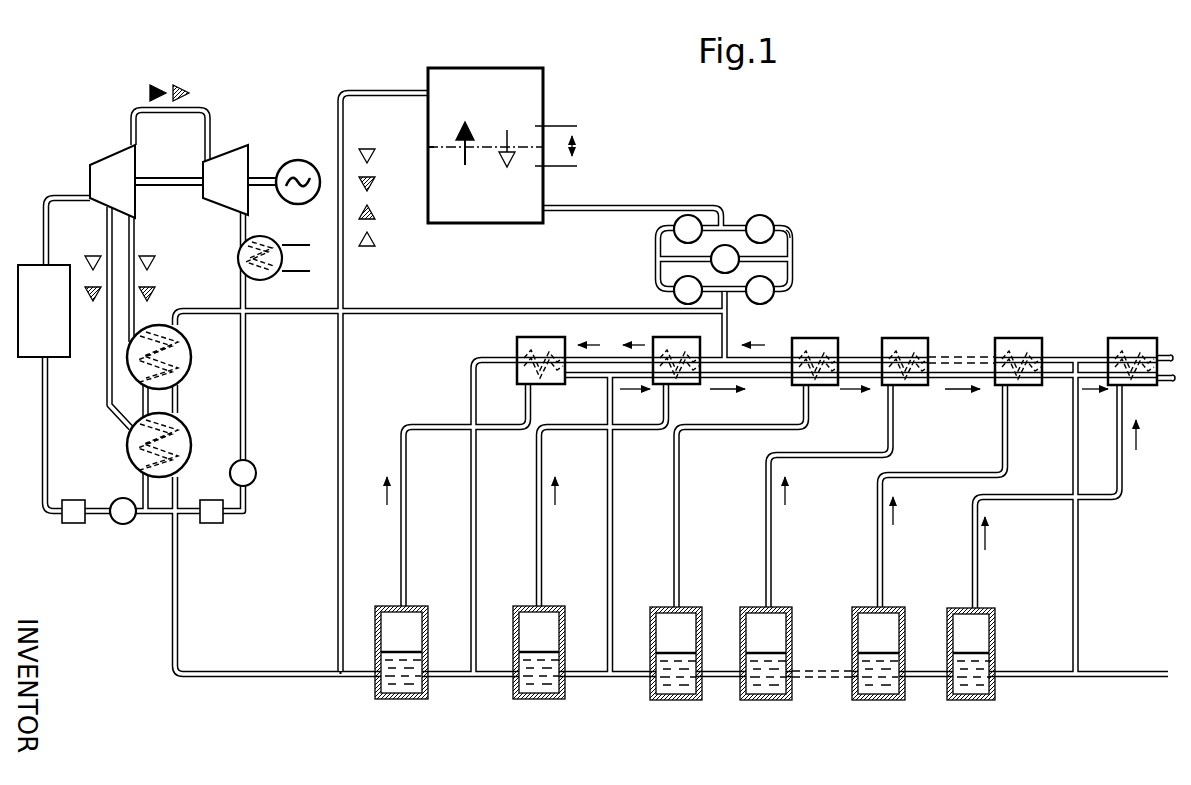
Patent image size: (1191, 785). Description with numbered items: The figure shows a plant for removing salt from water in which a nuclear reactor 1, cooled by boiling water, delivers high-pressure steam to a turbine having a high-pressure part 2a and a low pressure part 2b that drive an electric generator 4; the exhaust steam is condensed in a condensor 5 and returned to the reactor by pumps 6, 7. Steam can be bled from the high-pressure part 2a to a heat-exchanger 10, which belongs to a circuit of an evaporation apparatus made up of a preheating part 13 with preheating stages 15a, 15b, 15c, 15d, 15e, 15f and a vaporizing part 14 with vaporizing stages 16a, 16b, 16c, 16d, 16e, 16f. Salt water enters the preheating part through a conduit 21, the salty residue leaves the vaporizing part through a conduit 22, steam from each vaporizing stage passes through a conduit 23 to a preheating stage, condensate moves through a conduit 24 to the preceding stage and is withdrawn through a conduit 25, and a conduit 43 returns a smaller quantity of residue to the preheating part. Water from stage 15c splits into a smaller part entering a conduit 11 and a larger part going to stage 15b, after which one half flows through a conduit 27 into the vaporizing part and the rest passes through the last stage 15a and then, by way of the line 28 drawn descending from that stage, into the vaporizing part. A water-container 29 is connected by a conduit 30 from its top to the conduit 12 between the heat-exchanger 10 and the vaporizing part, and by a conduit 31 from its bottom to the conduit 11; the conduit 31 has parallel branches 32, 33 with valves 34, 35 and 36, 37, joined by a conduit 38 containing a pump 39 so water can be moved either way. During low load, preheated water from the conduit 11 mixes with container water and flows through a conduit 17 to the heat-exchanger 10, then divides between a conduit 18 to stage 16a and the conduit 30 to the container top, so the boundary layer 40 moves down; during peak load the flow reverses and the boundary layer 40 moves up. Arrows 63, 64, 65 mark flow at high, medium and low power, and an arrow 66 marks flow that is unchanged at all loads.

The nuclear reactor 1 is at (44, 311).
The high-pressure part 2a is at (108, 160).
The low pressure part 2b is at (232, 152).
The electric generator 4 is at (301, 161).
The condensor 5 is at (267, 245).
The pump 6 is at (225, 460).
The pump 7 is at (135, 490).
The heat-exchanger 10 is at (190, 368).
The conduit 11 is at (728, 330).
The conduit 12 is at (247, 678).
The preheating part 13 is at (1038, 316).
The vaporizing part 14 is at (854, 714).
The preheating stage 15a is at (532, 350).
The preheating stage 15b is at (664, 350).
The preheating stage 15c is at (802, 350).
The preheating stage 15d is at (890, 350).
The preheating stage 15e is at (1018, 350).
The preheating stage 15f is at (1130, 350).
The vaporizing stage 16a is at (414, 690).
The vaporizing stage 16b is at (552, 690).
The vaporizing stage 16c is at (689, 690).
The vaporizing stage 16d is at (779, 690).
The vaporizing stage 16e is at (892, 690).
The vaporizing stage 16f is at (984, 690).
The conduit 17 is at (400, 297).
The conduit 18 is at (352, 678).
The conduit 21 is at (1182, 368).
The conduit 22 is at (1162, 660).
The conduit 23 is at (690, 477).
The conduit 24 is at (774, 380).
The conduit 25 is at (1182, 397).
The conduit 27 is at (625, 478).
The connecting pipe 28 is at (487, 478).
The water-container 29 is at (543, 88).
The conduit 30 is at (336, 410).
The conduit 31 is at (638, 206).
The branch conduit 32 is at (656, 256).
The branch conduit 33 is at (792, 236).
The valve 34 is at (674, 228).
The valve 35 is at (675, 292).
The valve 36 is at (763, 215).
The valve 37 is at (770, 300).
The conduit 38 is at (790, 260).
The pump 39 is at (737, 239).
The boundary layer 40 is at (427, 146).
The conduit 43 is at (1090, 517).
The arrow 63 is at (375, 155).
The arrow 64 is at (373, 210).
The arrow 65 is at (376, 238).
The arrow 66 is at (58, 248).